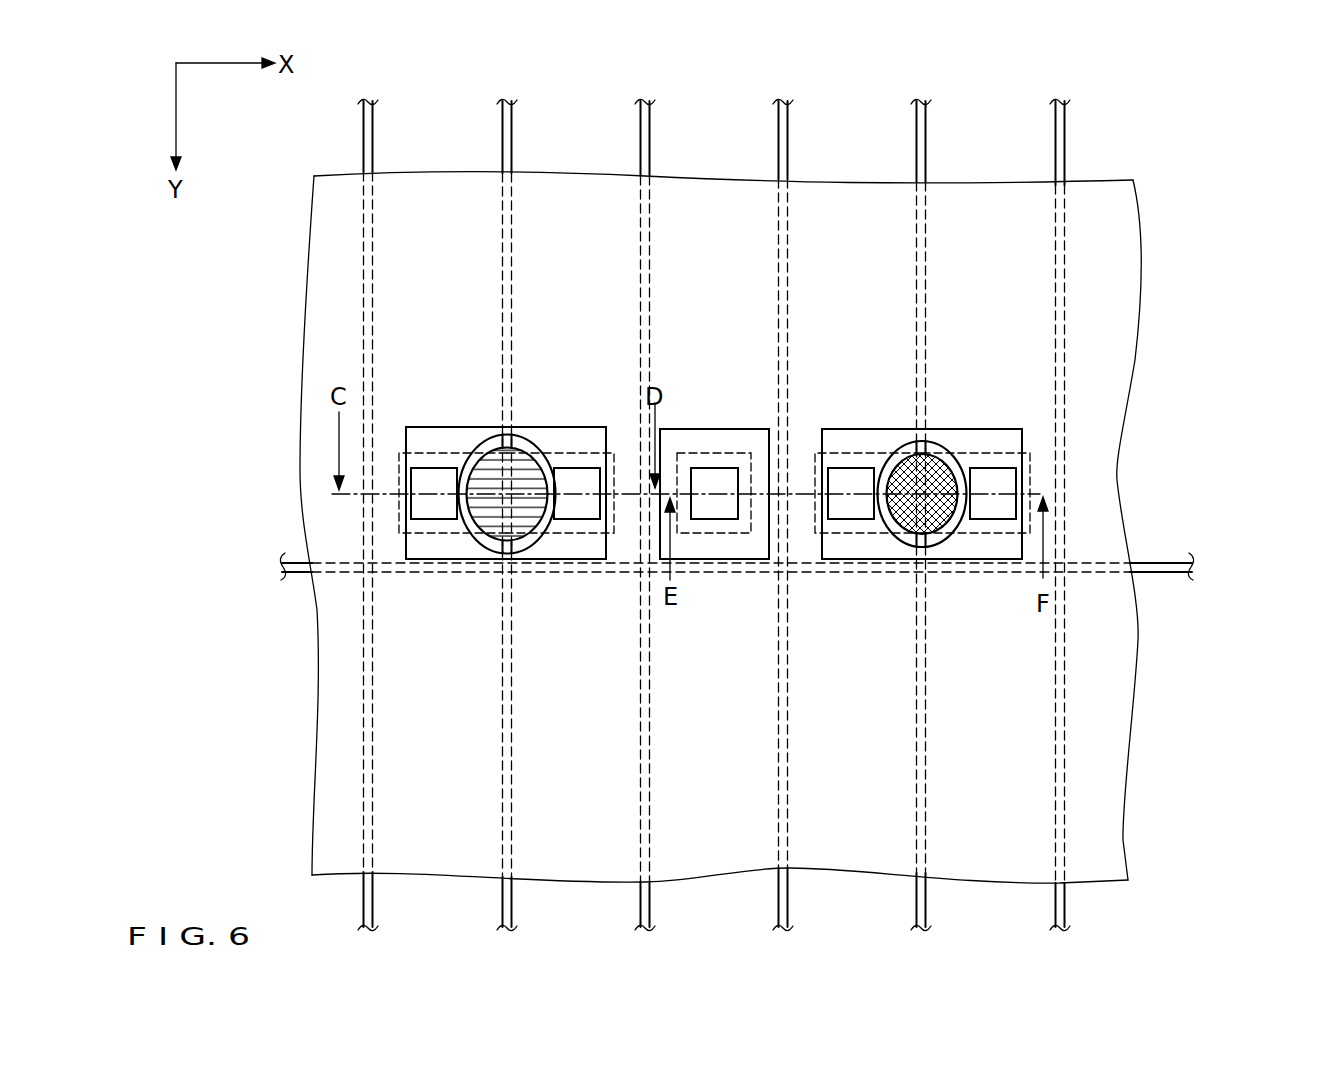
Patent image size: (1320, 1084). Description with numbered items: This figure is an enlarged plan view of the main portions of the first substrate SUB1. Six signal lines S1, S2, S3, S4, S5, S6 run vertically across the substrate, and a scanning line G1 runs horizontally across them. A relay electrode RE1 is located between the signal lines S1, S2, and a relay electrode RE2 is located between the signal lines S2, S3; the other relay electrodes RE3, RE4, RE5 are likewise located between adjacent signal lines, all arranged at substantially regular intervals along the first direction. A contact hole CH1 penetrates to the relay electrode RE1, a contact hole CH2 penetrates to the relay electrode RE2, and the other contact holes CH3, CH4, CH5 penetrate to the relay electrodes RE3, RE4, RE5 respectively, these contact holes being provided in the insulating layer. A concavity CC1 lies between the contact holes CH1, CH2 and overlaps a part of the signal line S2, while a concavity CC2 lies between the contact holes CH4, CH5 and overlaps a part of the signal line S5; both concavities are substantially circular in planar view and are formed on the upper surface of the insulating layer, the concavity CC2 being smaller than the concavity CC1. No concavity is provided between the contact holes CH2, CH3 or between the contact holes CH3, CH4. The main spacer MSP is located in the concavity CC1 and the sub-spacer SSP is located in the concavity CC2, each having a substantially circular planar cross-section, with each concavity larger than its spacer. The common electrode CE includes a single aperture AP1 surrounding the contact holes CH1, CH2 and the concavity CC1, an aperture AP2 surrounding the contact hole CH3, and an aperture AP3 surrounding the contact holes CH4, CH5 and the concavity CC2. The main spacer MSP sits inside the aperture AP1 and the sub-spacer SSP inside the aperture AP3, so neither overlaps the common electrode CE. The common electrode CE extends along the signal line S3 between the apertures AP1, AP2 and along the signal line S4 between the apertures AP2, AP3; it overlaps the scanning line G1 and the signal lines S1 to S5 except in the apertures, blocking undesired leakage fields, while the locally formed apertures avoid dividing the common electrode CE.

The first substrate SUB1 is at (1168, 222).
The common electrode CE is at (1105, 190).
The signal line S1 is at (374, 905).
The signal line S2 is at (513, 905).
The signal line S3 is at (651, 905).
The signal line S4 is at (789, 905).
The signal line S5 is at (927, 905).
The signal line S6 is at (1066, 905).
The scanning line G1 is at (1168, 566).
The aperture AP1 is at (589, 427).
The aperture AP2 is at (737, 428).
The aperture AP3 is at (1012, 428).
The relay electrode RE1 is at (418, 533).
The relay electrode RE2 is at (597, 533).
The relay electrode RE3 is at (697, 533).
The relay electrode RE4 is at (873, 533).
The relay electrode RE5 is at (1013, 533).
The contact hole CH1 is at (448, 520).
The contact hole CH2 is at (563, 520).
The contact hole CH3 is at (737, 520).
The contact hole CH4 is at (840, 520).
The contact hole CH5 is at (980, 520).
The concavity CC1 is at (530, 438).
The concavity CC2 is at (942, 438).
The main spacer MSP is at (493, 467).
The sub-spacer SSP is at (907, 467).